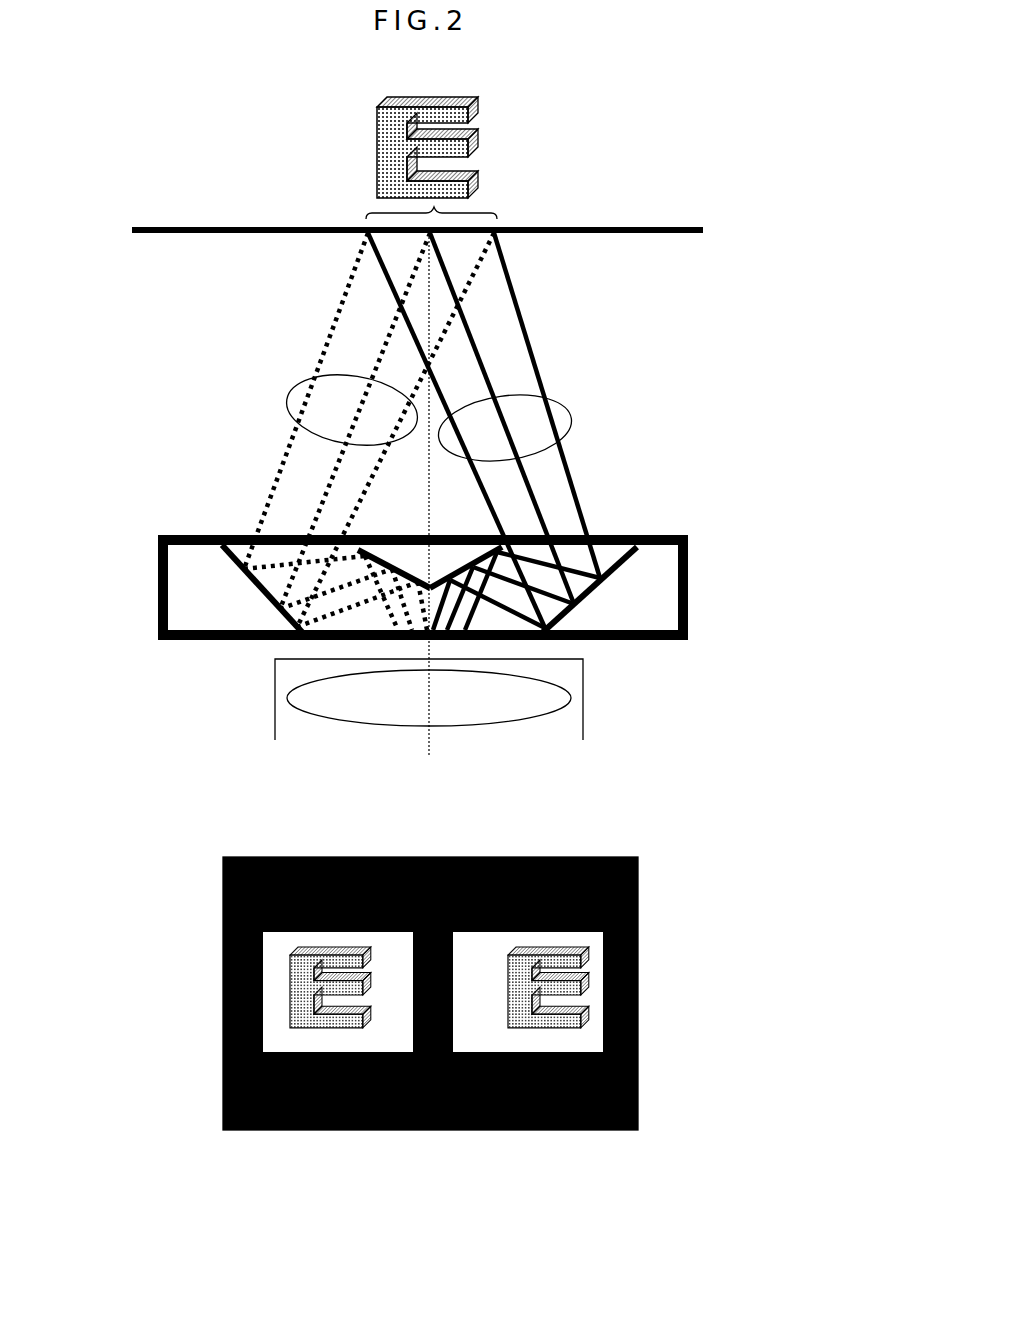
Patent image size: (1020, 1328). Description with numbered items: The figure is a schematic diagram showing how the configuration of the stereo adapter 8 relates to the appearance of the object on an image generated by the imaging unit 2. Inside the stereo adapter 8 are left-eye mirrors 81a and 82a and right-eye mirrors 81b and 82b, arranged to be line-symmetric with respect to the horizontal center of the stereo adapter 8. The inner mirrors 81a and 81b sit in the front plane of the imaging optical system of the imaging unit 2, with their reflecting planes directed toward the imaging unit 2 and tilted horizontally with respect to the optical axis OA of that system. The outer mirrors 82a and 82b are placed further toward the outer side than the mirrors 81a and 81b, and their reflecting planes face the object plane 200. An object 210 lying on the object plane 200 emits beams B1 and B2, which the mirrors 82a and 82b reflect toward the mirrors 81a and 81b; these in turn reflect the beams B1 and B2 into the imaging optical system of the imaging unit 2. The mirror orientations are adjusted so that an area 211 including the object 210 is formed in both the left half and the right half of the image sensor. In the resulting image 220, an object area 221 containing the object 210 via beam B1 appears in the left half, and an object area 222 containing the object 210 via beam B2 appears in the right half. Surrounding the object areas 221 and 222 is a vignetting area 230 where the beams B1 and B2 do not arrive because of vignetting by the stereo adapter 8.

The object 210 is at (480, 146).
The area including the object 211 is at (437, 207).
The object plane 200 is at (672, 225).
The optical axis OA is at (432, 745).
The beam B1 is at (288, 397).
The beam B2 is at (572, 418).
The stereo adapter 8 is at (654, 637).
The left-eye mirror 81a is at (395, 552).
The right-eye mirror 81b is at (452, 565).
The left-eye mirror 82a is at (247, 582).
The right-eye mirror 82b is at (600, 588).
The imaging unit 2 is at (583, 727).
The image 220 is at (437, 1054).
The object area 221 is at (275, 1032).
The object area 222 is at (588, 1038).
The vignetting area 230 is at (341, 1108).